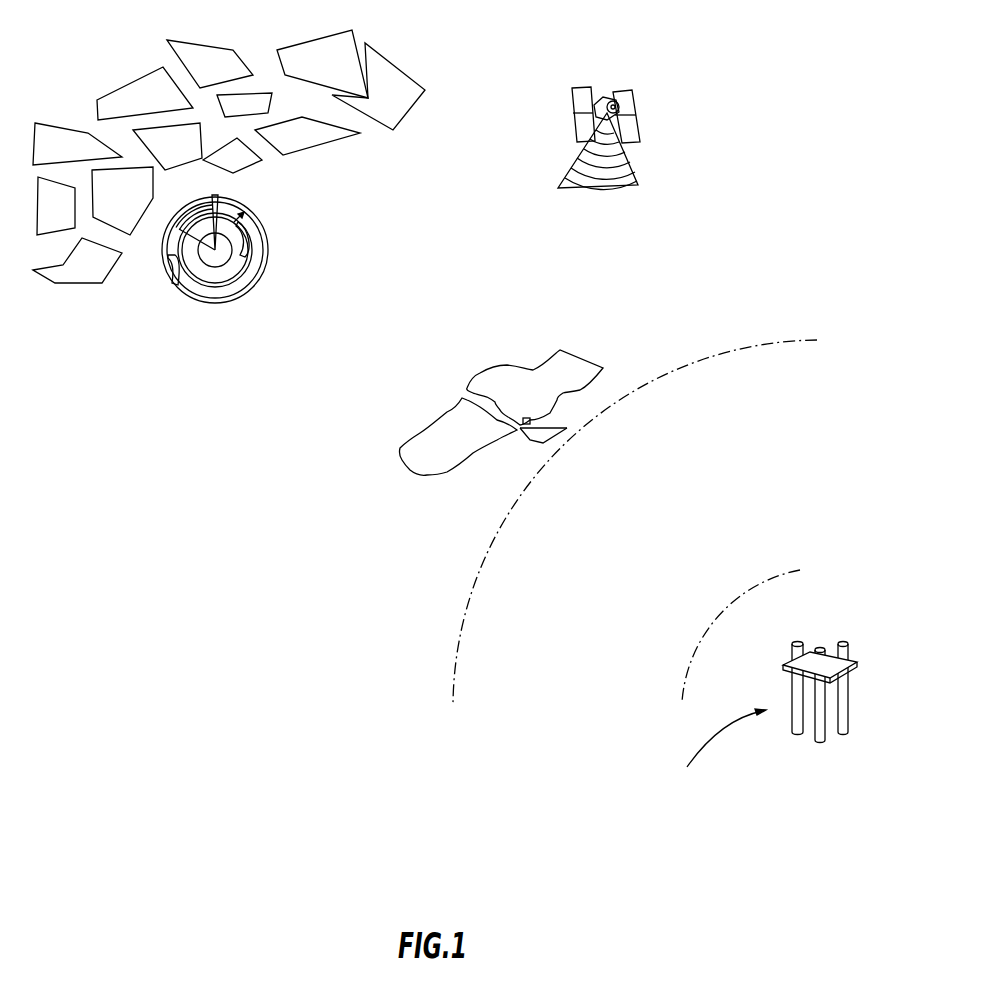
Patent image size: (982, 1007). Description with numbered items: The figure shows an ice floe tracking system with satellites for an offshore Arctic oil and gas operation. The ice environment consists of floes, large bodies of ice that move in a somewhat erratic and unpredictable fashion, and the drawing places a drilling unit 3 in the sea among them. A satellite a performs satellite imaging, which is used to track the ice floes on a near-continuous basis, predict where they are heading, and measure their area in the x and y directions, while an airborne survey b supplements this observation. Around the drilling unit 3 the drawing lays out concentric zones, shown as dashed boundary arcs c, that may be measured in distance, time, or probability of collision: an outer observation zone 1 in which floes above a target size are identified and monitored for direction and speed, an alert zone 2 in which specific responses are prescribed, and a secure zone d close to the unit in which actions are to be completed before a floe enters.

The first region / surveyed land area 1 is at (229, 358).
The second region 2 is at (575, 689).
The third region with drilling unit 3 is at (727, 719).
The satellite remote sensing a is at (520, 165).
The aerial survey aircraft b is at (501, 412).
The boundary line c is at (637, 515).
The inner zone d is at (752, 614).